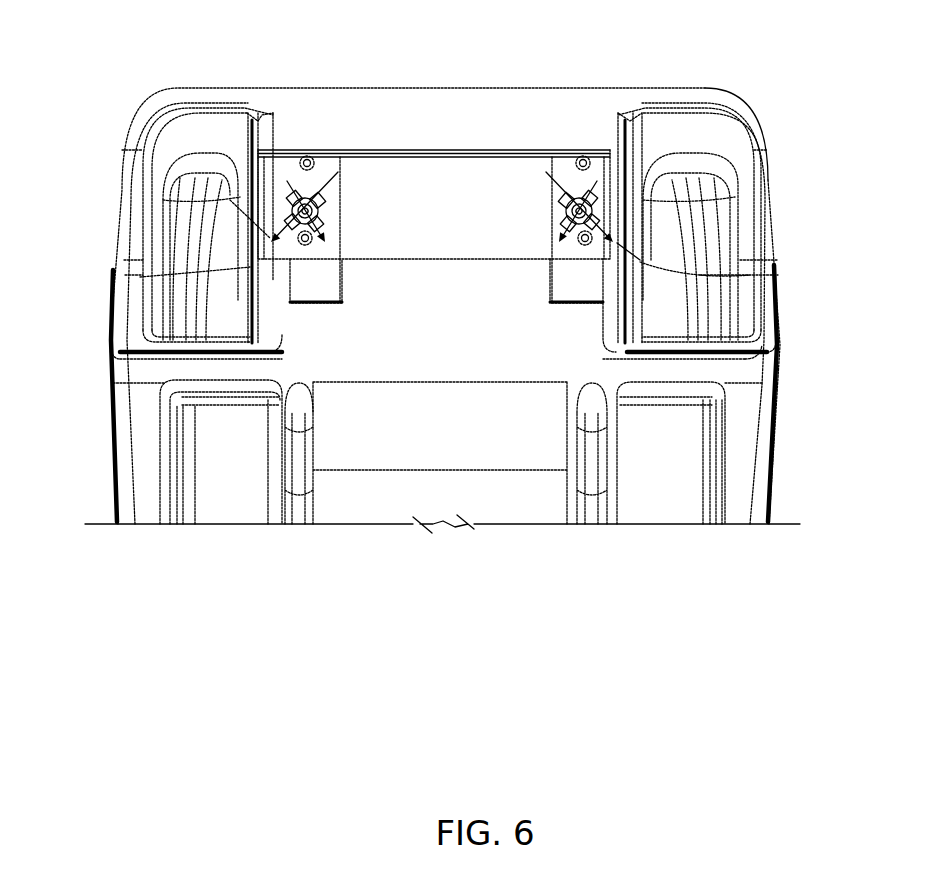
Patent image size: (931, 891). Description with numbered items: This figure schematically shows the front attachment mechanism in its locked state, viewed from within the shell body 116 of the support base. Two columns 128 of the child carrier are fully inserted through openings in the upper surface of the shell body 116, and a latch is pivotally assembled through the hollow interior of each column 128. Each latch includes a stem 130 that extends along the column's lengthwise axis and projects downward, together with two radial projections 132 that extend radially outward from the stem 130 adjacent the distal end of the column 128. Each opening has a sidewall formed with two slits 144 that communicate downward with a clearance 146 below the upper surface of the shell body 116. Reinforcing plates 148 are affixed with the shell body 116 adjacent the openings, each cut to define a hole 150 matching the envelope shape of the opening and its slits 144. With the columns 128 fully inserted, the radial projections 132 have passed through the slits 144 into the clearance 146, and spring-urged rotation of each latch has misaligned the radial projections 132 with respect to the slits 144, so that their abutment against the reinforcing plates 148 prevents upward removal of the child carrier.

The shell body 116 is at (110, 433).
The column 128 is at (262, 181).
The stem 130 is at (332, 227).
The radial projection 132 is at (163, 200).
The slit 144 is at (335, 172).
The clearance 146 is at (440, 172).
The reinforcing plate 148 is at (285, 165).
The hole 150 is at (320, 243).